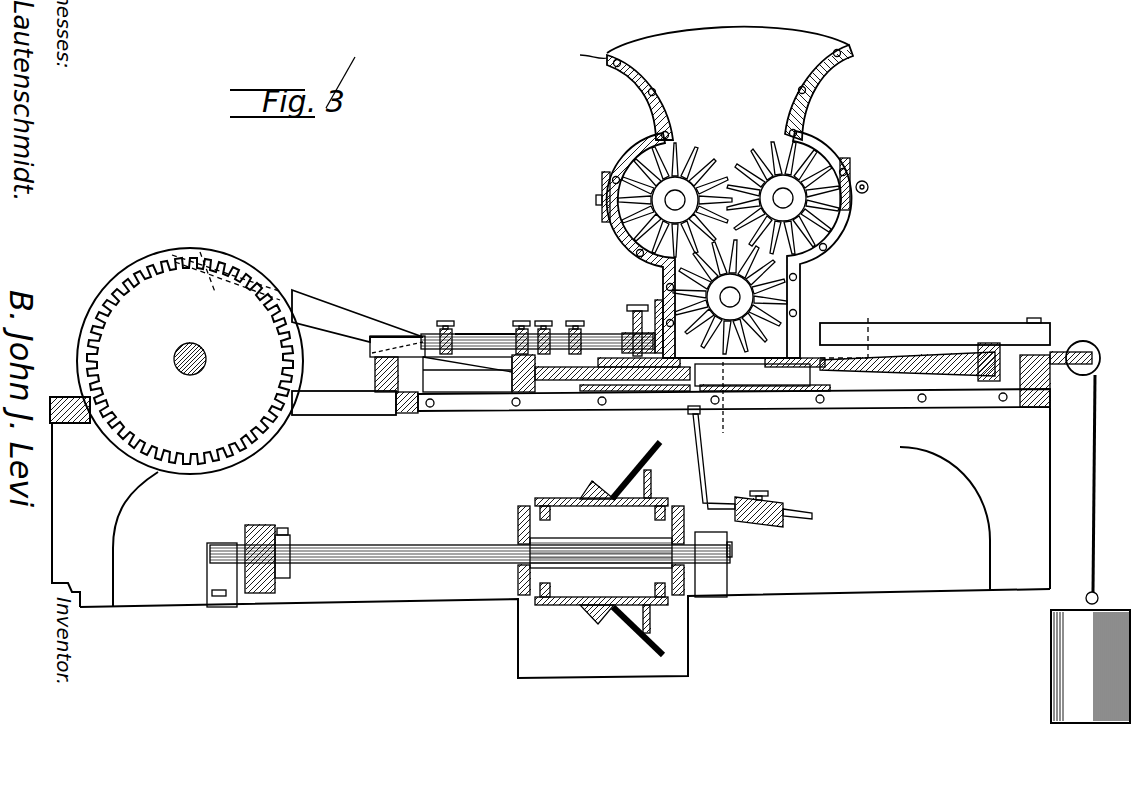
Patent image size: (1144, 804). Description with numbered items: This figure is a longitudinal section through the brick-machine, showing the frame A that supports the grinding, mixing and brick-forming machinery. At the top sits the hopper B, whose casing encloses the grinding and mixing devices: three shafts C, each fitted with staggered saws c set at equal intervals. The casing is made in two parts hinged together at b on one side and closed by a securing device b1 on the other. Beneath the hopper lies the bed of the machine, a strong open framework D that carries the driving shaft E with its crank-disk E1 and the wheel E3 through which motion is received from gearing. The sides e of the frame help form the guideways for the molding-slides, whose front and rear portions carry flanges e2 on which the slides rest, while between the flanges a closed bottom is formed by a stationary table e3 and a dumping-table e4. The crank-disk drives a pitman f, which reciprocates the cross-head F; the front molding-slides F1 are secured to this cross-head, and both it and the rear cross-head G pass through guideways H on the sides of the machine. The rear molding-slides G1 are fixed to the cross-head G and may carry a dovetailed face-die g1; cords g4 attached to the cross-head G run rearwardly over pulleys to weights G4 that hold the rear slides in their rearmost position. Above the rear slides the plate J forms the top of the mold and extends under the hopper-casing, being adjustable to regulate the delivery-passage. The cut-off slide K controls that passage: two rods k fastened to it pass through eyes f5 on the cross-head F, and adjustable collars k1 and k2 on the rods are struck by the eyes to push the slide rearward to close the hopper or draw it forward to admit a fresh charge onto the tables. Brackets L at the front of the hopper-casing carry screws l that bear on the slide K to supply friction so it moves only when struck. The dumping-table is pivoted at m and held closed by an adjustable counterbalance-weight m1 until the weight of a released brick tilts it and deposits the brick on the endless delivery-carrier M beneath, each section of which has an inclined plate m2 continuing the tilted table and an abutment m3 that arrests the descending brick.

The frame A is at (550, 537).
The hopper B is at (700, 83).
The shaft C is at (665, 202).
The saw c is at (692, 163).
The hinge b is at (867, 184).
The securing device b1 is at (587, 197).
The open framework D is at (385, 413).
The shaft E is at (440, 390).
The crank-disk E1 is at (112, 288).
The wheel E3 is at (170, 349).
The pitman f is at (335, 313).
The cross-head F is at (408, 398).
The front molding-slide F1 is at (555, 392).
The guideway H is at (897, 352).
The cut-off slide K is at (582, 388).
The rod k is at (472, 340).
The collar k1 is at (543, 328).
The collar k2 is at (445, 326).
The eye f5 is at (521, 328).
The bracket L is at (625, 326).
The screw l is at (637, 305).
The side of the frame e is at (907, 333).
The flange e2 is at (490, 383).
The stationary table e3 is at (760, 390).
The dumping-table e4 is at (633, 390).
The plate J is at (797, 390).
The cross-head G is at (990, 342).
The rear molding-slide G1 is at (890, 380).
The weight G4 is at (1052, 630).
The cord g4 is at (1090, 487).
The face-die g1 is at (800, 430).
The pivot m is at (690, 416).
The counterbalance-weight m1 is at (777, 527).
The inclined plate m2 is at (640, 652).
The abutment m3 is at (600, 485).
The endless delivery-carrier M is at (577, 607).